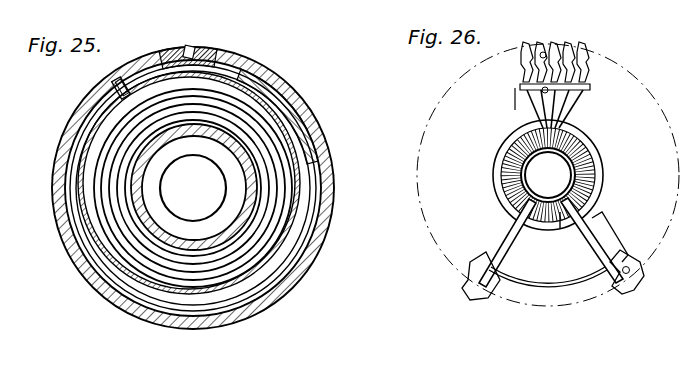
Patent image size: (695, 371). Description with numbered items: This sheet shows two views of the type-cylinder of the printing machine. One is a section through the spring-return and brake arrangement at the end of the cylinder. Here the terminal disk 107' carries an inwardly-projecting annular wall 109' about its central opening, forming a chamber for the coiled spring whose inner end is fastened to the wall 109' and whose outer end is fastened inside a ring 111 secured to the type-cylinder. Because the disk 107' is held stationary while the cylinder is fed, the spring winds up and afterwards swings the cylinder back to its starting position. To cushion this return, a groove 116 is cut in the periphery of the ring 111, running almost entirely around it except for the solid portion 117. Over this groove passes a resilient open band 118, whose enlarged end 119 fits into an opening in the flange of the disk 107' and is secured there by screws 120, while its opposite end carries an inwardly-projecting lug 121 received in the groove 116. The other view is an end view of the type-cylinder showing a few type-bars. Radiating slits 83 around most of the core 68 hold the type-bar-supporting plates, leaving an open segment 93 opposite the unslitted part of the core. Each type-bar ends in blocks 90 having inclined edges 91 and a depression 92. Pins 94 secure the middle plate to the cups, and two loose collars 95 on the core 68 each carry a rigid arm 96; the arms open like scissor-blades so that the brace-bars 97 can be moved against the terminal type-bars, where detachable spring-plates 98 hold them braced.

In FIG. 25, the inwardly-projecting annular wall 109' is at (193, 180).
In FIG. 25, the solid portion 117 is at (96, 108).
In FIG. 25, the groove 116 is at (97, 143).
In FIG. 25, the ring 111 is at (290, 140).
In FIG. 25, the terminal disk 107' is at (205, 188).
In FIG. 25, the open band 118 is at (74, 230).
In FIG. 25, the enlarged end 119 is at (166, 54).
In FIG. 25, the screws 120 is at (192, 50).
In FIG. 25, the inwardly-projecting lug 121 is at (118, 82).
In FIG. 26, the radiating slits 83 is at (590, 160).
In FIG. 26, the collars 95 is at (578, 140).
In FIG. 26, the pins 94 is at (545, 52).
In FIG. 26, the inclined edges 91 is at (578, 66).
In FIG. 26, the depression 92 is at (586, 70).
In FIG. 26, the blocks 90 is at (587, 76).
In FIG. 26, the rigid arm 96 is at (524, 232).
In FIG. 26, the detachable spring-plates 98 is at (560, 283).
In FIG. 26, the brace-bar 97 is at (492, 286).
In FIG. 26, the core 68 is at (560, 216).
In FIG. 26, the open space or segment 93 is at (560, 257).